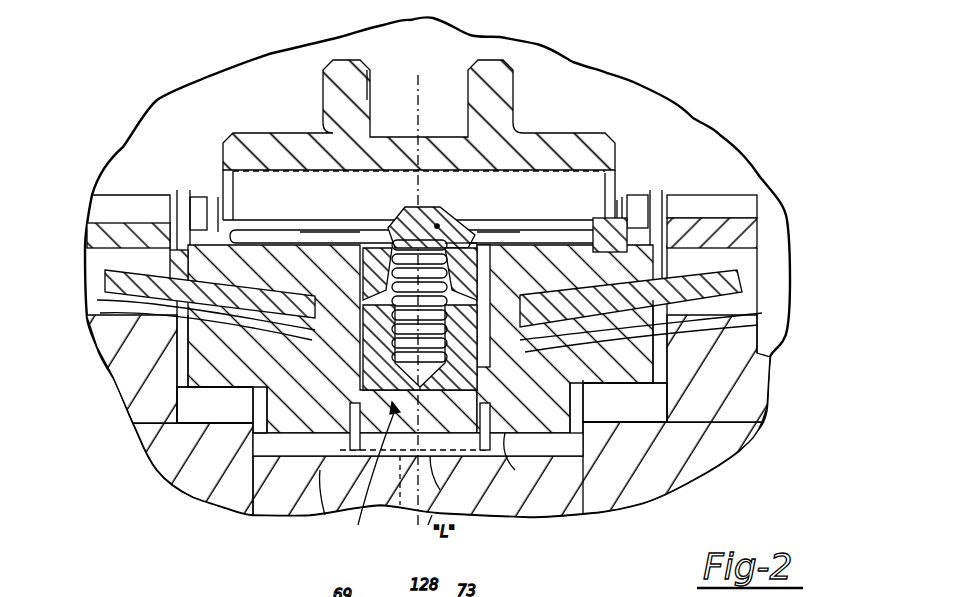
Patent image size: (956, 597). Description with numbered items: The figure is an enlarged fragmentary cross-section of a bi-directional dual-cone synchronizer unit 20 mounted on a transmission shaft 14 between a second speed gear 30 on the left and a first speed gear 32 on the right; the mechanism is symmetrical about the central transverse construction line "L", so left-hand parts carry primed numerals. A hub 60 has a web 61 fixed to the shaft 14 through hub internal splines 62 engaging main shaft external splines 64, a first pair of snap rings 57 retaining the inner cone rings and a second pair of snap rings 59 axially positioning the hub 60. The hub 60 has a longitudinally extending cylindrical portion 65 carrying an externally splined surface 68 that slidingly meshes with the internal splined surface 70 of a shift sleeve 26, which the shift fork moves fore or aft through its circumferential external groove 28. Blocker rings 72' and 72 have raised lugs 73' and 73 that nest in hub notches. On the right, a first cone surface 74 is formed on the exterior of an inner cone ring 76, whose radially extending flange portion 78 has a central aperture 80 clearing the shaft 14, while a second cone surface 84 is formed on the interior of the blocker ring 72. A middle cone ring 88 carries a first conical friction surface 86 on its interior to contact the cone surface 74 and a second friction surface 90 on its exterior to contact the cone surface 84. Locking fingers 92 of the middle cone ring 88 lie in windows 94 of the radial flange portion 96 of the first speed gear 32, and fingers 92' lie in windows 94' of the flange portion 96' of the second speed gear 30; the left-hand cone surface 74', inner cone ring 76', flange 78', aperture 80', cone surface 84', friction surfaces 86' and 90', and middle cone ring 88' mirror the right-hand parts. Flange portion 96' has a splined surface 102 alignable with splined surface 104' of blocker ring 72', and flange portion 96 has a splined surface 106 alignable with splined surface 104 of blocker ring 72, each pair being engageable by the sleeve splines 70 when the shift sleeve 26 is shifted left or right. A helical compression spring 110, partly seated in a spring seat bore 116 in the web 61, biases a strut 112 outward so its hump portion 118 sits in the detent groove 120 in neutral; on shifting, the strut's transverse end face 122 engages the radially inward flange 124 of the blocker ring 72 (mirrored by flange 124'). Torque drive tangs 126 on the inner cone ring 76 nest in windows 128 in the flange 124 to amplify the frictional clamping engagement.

The transmission shaft 14 is at (560, 508).
The synchronizer unit 20 is at (728, 93).
The shift sleeve 26 is at (546, 128).
The circumferential external groove 28 is at (478, 72).
The second speed gear 30 is at (172, 446).
The first speed gear 32 is at (703, 451).
The first pair of snap rings 57 is at (252, 435).
The second pair of snap rings 59 is at (396, 496).
The hub 60 is at (375, 471).
The hub web 61 is at (519, 456).
The hub internal splines 62 is at (390, 498).
The main shaft external splines 64 is at (258, 470).
The cylindrical portion 65 is at (617, 200).
The externally splined surface 68 is at (262, 185).
The internal sleeve splined surface 70 is at (236, 226).
The blocker ring 72 is at (565, 339).
The blocker ring 72' is at (332, 339).
The raised lugs 73 is at (650, 189).
The raised lugs 73' is at (209, 169).
The first cone surface 74 is at (643, 348).
The first cone surface 74' is at (117, 349).
The inner cone ring 76 is at (592, 405).
The inner cone ring 76' is at (244, 406).
The radially extending flange portion 78 is at (622, 402).
The radially extending flange portion 78' is at (234, 405).
The central aperture 80 is at (473, 463).
The central aperture 80' is at (277, 502).
The second cone surface 84 is at (672, 241).
The second cone surface 84' is at (166, 234).
The first conical friction surface 86 is at (625, 370).
The first conical friction surface 86' is at (215, 381).
The middle cone ring 88 is at (667, 332).
The middle cone ring 88' is at (178, 314).
The second conical friction surface 90 is at (596, 222).
The second conical friction surface 90' is at (160, 267).
The locking fingers 92 is at (668, 298).
The locking fingers 92' is at (180, 288).
The window 94 is at (741, 333).
The window 94' is at (122, 369).
The radial flange portion 96 is at (739, 368).
The flange portion 96' is at (130, 351).
The splined surface 102 is at (118, 216).
The splined surface 104 is at (662, 198).
The splined surface 104' is at (186, 186).
The splined surface 106 is at (758, 212).
The helical compression spring 110 is at (440, 300).
The strut 112 is at (450, 195).
The spring seat bore 116 is at (352, 418).
The hump portion 118 is at (400, 214).
The detent groove 120 is at (438, 225).
The transverse end face 122 is at (466, 243).
The radial inwardly extending flange 124 is at (511, 218).
The radial inwardly extending flange 124' is at (325, 218).
The torque drive tangs 126 is at (445, 372).
The window 128 is at (395, 293).